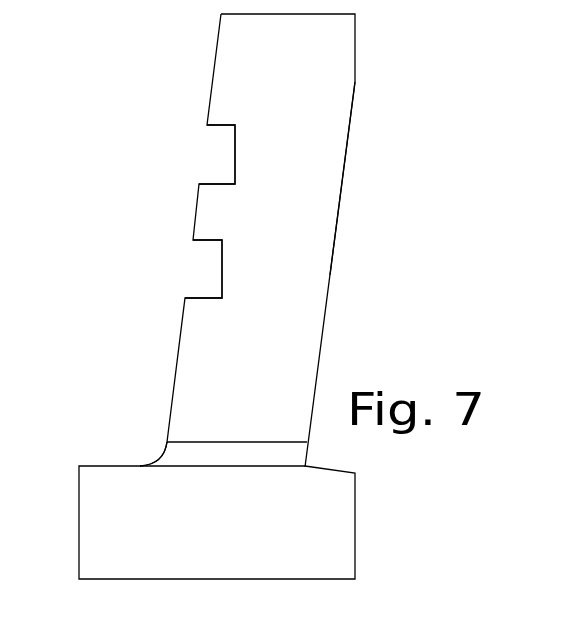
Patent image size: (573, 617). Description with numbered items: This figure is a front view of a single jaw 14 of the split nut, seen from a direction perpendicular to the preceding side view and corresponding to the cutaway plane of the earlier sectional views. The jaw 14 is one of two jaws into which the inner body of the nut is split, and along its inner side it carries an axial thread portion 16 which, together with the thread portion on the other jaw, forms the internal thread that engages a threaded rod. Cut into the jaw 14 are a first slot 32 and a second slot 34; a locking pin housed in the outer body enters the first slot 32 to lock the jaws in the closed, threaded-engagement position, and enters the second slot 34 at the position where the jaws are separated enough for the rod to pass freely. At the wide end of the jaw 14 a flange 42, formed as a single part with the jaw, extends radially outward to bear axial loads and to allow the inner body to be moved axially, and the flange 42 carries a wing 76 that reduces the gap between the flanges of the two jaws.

The jaw 14 is at (153, 85).
The axial thread portion 16 is at (328, 228).
The second slot 34 is at (210, 182).
The first slot 32 is at (200, 295).
The flange 42 is at (102, 465).
The wing 76 is at (353, 522).